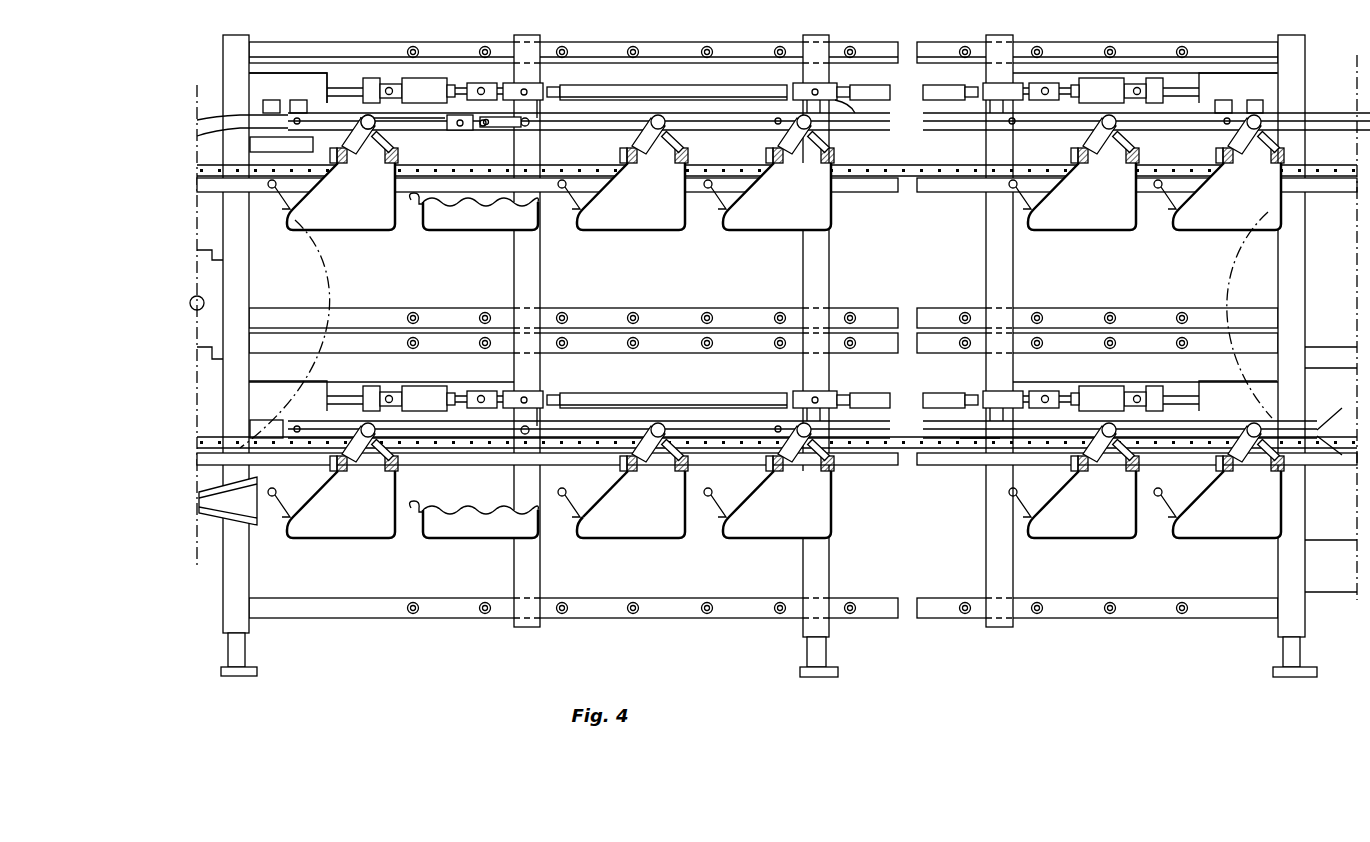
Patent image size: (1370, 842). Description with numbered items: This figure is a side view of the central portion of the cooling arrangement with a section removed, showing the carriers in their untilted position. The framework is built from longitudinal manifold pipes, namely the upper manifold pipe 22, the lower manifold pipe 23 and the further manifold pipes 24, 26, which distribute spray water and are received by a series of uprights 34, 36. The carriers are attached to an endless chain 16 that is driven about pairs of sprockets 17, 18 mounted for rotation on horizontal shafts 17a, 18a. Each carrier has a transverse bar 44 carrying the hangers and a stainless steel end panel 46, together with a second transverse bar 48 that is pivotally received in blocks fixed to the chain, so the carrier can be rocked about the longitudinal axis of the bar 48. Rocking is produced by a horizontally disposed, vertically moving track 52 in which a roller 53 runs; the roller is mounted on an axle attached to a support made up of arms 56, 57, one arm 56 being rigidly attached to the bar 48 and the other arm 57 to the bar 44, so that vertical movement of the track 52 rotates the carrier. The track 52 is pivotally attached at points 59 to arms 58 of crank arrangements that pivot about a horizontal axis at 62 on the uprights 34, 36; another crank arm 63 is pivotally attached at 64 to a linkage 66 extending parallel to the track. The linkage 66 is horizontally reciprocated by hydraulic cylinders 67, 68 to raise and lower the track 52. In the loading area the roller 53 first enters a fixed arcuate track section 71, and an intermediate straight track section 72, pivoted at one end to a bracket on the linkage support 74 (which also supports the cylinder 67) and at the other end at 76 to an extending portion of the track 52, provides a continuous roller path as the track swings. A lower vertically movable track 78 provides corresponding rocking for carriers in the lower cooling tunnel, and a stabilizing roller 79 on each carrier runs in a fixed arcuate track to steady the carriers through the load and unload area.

The endless chain 16 is at (890, 173).
The pair of sprockets 17 is at (338, 272).
The horizontal shaft 17a is at (205, 301).
The pair of sprockets 18 is at (1228, 262).
The horizontal shaft 18a is at (1355, 303).
The upper manifold pipe 22 is at (875, 50).
The lower manifold pipe 23 is at (887, 310).
The longitudinal manifold pipe 24 is at (885, 353).
The longitudinal manifold pipe 26 is at (878, 598).
The upright 34 is at (812, 571).
The upright 36 is at (1015, 568).
The transverse bar 44 is at (692, 469).
The end panel 46 is at (650, 525).
The second transverse bar 48 is at (631, 473).
The track 52 is at (585, 130).
The roller 53 is at (372, 130).
The arm 56 is at (640, 425).
The arm 57 is at (682, 440).
The arm 58 is at (495, 130).
The pivot point 59 is at (480, 130).
The pivot axis 62 is at (540, 128).
The arm 63 is at (845, 118).
The pivot point 64 is at (546, 91).
The linkage 66 is at (658, 85).
The hydraulic cylinder 67 is at (425, 78).
The hydraulic cylinder 68 is at (1105, 78).
The fixed arcuate track section 71 is at (215, 116).
The intermediate straight track section 72 is at (425, 140).
The linkage support 74 is at (345, 73).
The pivot point 76 is at (462, 135).
The lower vertically movable track 78 is at (978, 452).
The stabilizing roller 79 is at (586, 487).